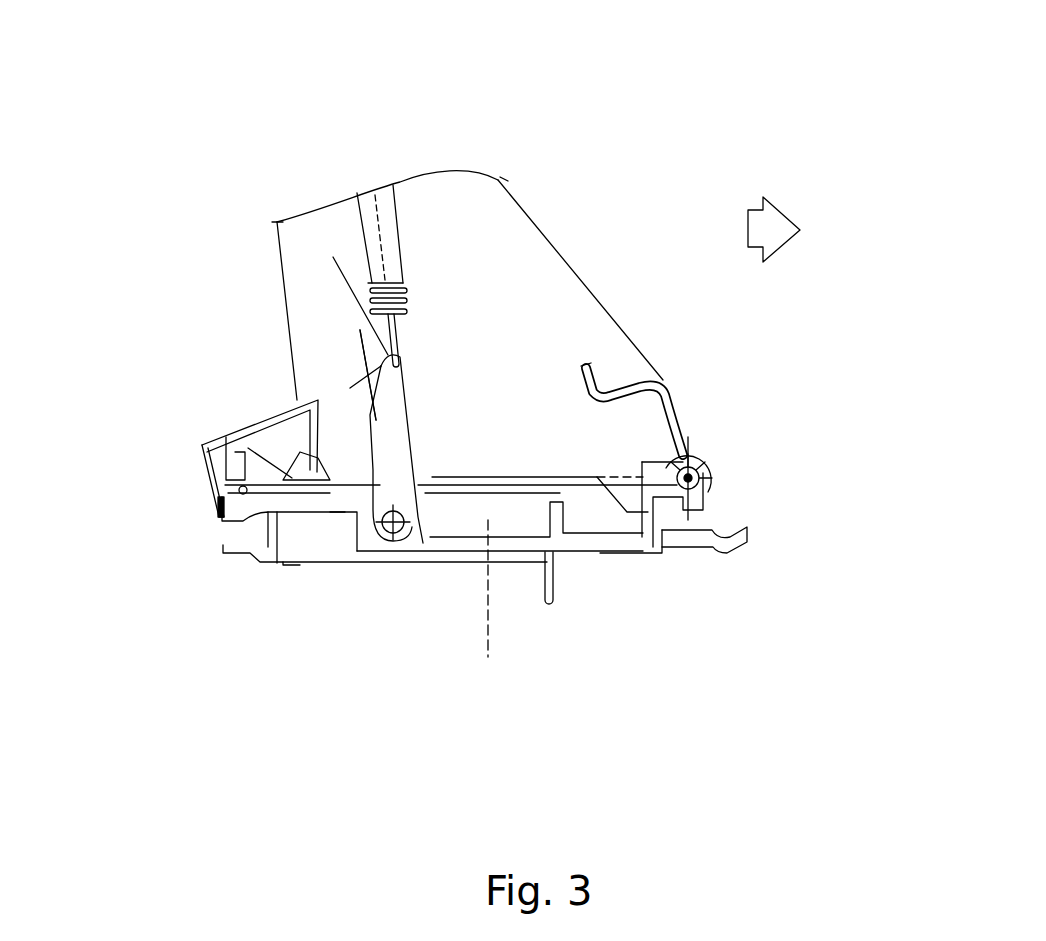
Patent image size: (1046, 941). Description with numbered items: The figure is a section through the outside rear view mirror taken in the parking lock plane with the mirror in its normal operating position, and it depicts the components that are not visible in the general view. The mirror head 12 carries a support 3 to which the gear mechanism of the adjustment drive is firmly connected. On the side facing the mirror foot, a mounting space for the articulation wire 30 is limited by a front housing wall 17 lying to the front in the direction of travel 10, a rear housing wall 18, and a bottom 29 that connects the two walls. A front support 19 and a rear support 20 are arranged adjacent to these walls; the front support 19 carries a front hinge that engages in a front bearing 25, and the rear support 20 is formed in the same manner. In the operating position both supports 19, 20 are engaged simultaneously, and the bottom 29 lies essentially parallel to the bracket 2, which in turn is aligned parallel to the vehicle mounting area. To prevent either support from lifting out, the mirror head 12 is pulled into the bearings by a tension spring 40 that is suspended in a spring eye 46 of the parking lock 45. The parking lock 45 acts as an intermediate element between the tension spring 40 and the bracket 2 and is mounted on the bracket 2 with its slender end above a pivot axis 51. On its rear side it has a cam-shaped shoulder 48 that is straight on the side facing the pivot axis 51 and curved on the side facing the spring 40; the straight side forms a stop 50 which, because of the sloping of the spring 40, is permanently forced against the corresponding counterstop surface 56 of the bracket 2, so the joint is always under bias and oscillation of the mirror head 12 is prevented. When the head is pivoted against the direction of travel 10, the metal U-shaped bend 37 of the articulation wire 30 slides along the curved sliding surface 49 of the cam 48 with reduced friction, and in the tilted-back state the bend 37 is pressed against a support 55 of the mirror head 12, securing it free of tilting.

The bracket 2 is at (525, 552).
The support 3 is at (663, 398).
The direction of travel 10 is at (778, 223).
The mirror head 12 is at (318, 203).
The front housing wall 17 is at (710, 455).
The rear housing wall 18 is at (217, 508).
The front support 19 is at (722, 482).
The rear support 20 is at (198, 500).
The front bearing 25 is at (661, 497).
The bottom 29 is at (480, 475).
The articulation wire 30 is at (455, 485).
The U-shaped bend 37 is at (347, 492).
The tension spring 40 is at (388, 213).
The parking lock 45 is at (357, 385).
The spring eye 46 is at (333, 257).
The cam-shaped shoulder 48 is at (360, 330).
The sliding surface 49 is at (340, 428).
The stop 50 is at (297, 388).
The pivot axis 51 is at (393, 525).
The support 55 is at (309, 480).
The counterstop surface 56 is at (330, 465).